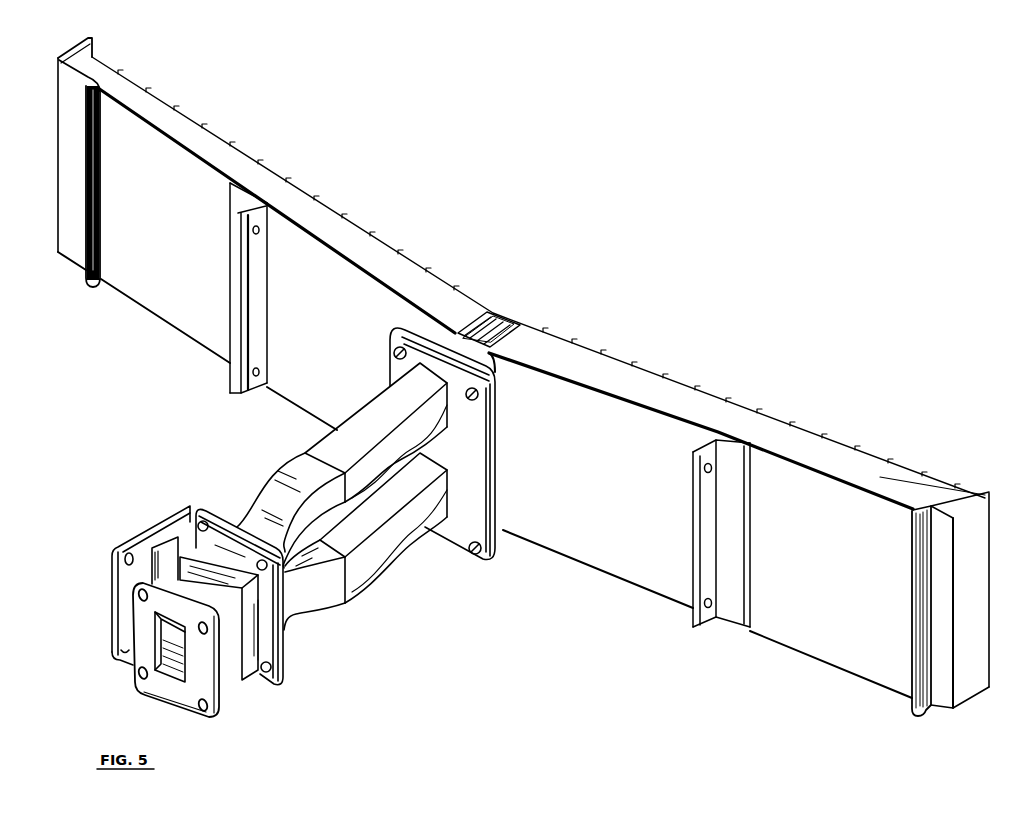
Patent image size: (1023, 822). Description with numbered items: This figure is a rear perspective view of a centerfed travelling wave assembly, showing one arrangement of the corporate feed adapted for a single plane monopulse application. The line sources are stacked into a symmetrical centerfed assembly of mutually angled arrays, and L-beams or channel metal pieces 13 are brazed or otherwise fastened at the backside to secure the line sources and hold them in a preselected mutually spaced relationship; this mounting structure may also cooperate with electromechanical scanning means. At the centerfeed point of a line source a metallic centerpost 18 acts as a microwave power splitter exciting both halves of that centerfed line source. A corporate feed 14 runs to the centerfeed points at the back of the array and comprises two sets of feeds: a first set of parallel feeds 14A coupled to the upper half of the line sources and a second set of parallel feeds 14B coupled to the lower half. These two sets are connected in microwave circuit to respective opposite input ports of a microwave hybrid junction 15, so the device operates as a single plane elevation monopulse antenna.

The L-beams or channel metal pieces 13 is at (921, 505).
The metallic centerpost 18 is at (500, 336).
The corporate feed 14 is at (399, 562).
The first set of parallel feeds 14A is at (343, 512).
The second set of parallel feeds 14B is at (338, 601).
The microwave hybrid junction 15 is at (246, 681).